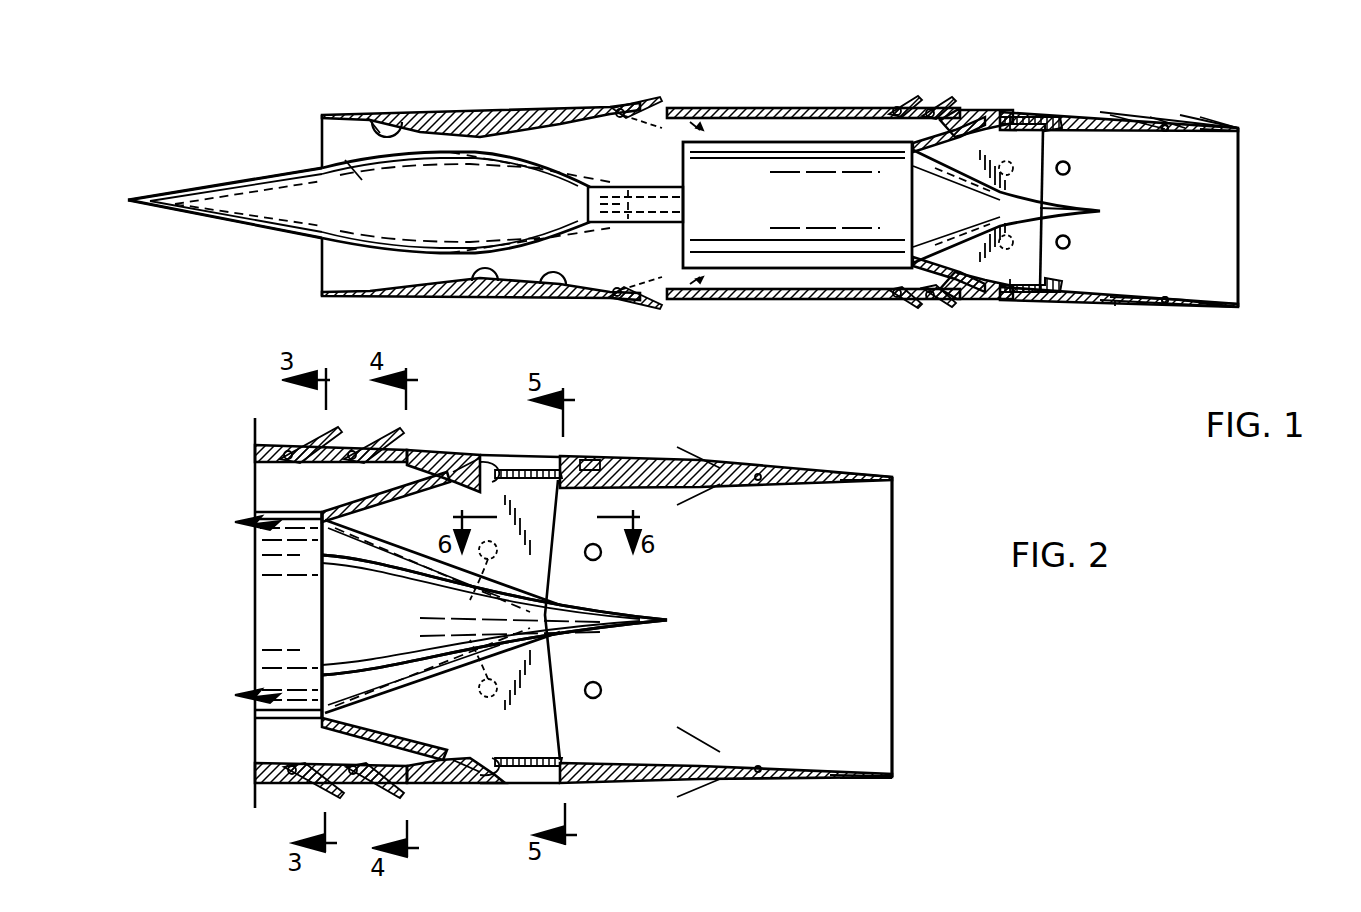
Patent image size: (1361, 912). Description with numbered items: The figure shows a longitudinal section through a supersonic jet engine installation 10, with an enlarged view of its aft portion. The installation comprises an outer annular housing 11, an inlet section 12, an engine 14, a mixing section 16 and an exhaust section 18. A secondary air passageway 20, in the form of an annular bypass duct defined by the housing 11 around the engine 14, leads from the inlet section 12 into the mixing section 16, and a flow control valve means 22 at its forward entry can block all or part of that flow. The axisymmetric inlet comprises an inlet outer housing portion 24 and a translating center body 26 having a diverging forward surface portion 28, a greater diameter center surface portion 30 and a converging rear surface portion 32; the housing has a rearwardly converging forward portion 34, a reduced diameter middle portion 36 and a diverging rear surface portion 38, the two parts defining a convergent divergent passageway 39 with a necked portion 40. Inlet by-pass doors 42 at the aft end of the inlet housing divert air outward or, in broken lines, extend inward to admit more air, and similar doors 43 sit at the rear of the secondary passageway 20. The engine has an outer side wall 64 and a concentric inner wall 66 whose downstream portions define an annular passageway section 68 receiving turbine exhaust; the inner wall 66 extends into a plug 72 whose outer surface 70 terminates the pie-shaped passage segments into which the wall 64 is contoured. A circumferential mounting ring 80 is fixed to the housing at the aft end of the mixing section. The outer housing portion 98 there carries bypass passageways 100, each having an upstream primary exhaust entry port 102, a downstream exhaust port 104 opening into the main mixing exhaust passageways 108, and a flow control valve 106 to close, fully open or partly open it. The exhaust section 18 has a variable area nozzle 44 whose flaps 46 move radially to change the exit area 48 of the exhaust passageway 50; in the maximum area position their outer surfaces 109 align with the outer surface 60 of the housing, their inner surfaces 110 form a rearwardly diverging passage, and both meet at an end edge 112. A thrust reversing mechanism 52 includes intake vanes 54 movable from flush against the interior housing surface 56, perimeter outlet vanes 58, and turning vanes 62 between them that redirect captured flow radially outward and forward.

In FIG. 1, the supersonic jet engine installation 10 is at (742, 75).
In FIG. 1, the outer annular housing 11 is at (810, 100).
In FIG. 1, the inlet section 12 is at (255, 135).
In FIG. 1, the engine 14 is at (765, 125).
In FIG. 1, the mixing section 16 is at (1000, 105).
In FIG. 2, the mixing section 16 is at (432, 435).
In FIG. 1, the exhaust section 18 is at (1180, 70).
In FIG. 2, the exhaust section 18 is at (765, 432).
In FIG. 1, the secondary air passageway means 20 is at (820, 299).
In FIG. 2, the secondary air passageway means 20 is at (292, 465).
In FIG. 1, the flow control valve means 22 is at (690, 122).
In FIG. 1, the inlet outer housing portion 24 is at (475, 110).
In FIG. 1, the translating center body 26 is at (340, 168).
In FIG. 1, the forward surface portion 28 is at (262, 165).
In FIG. 1, the center surface portion 30 is at (425, 150).
In FIG. 1, the rear surface portion 32 is at (537, 175).
In FIG. 1, the forward portion 34 is at (378, 133).
In FIG. 1, the middle portion 36 is at (487, 284).
In FIG. 1, the rear surface portion 38 is at (555, 289).
In FIG. 1, the convergent divergent passageway 39 is at (360, 258).
In FIG. 1, the necked portion 40 is at (415, 284).
In FIG. 1, the inlet by-pass doors 42 is at (630, 105).
In FIG. 1, the doors 43 is at (900, 100).
In FIG. 1, the variable area nozzle 44 is at (1237, 115).
In FIG. 2, the variable area nozzle 44 is at (852, 470).
In FIG. 1, the flaps 46 is at (1195, 123).
In FIG. 1, the exit area 48 is at (1240, 198).
In FIG. 2, the exit area 48 is at (895, 563).
In FIG. 1, the exhaust passageway 50 is at (1228, 216).
In FIG. 2, the exhaust passageway 50 is at (855, 586).
In FIG. 1, the thrust reversing mechanism 52 is at (1133, 305).
In FIG. 1, the intake vanes 54 is at (1135, 142).
In FIG. 1, the interior housing surface 56 is at (1090, 160).
In FIG. 1, the perimeter outlet vanes 58 is at (1115, 115).
In FIG. 1, the outer surface 60 is at (985, 117).
In FIG. 1, the turning vanes 62 is at (1110, 135).
In FIG. 1, the outer side wall 64 is at (782, 268).
In FIG. 2, the outer side wall 64 is at (290, 500).
In FIG. 2, the inner wall 66 is at (300, 560).
In FIG. 2, the annular passageway section 68 is at (300, 532).
In FIG. 2, the outer surface 70 is at (660, 622).
In FIG. 2, the plug 72 is at (640, 640).
In FIG. 1, the circumferential mounting ring 80 is at (1040, 300).
In FIG. 2, the circumferential mounting ring 80 is at (560, 772).
In FIG. 2, the outer housing portion 98 is at (565, 422).
In FIG. 1, the bypass passageways 100 is at (1010, 117).
In FIG. 2, the bypass passageways 100 is at (560, 470).
In FIG. 2, the primary exhaust entry port 102 is at (490, 460).
In FIG. 2, the exhaust port 104 is at (596, 480).
In FIG. 2, the flow control valve 106 is at (500, 470).
In FIG. 2, the main mixing exhaust passageways 108 is at (615, 670).
In FIG. 1, the outer surfaces 109 is at (1180, 112).
In FIG. 2, the outer surfaces 109 is at (832, 468).
In FIG. 1, the inner surfaces 110 is at (1235, 132).
In FIG. 2, the inner surfaces 110 is at (838, 485).
In FIG. 1, the end edge 112 is at (1240, 128).
In FIG. 2, the end edge 112 is at (892, 777).